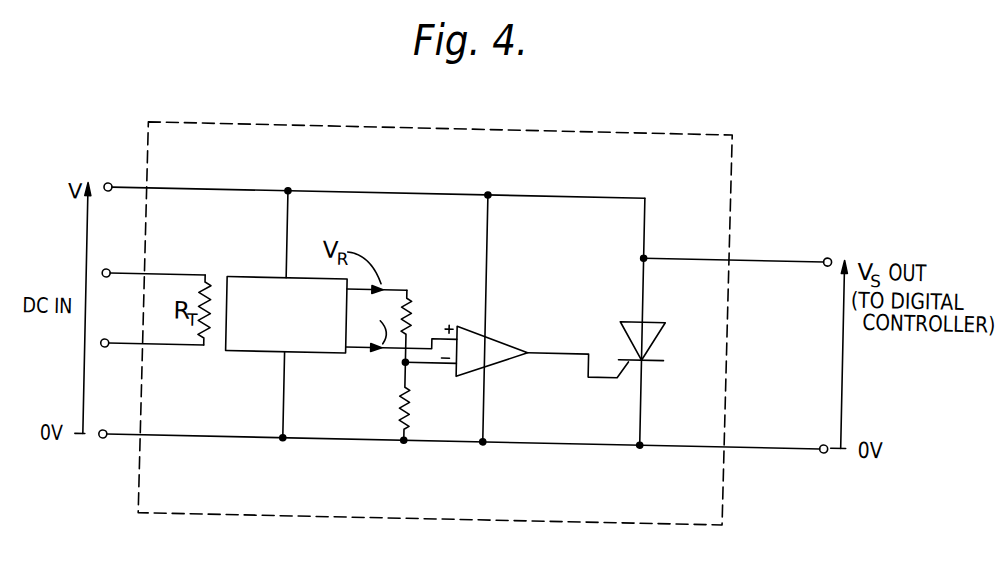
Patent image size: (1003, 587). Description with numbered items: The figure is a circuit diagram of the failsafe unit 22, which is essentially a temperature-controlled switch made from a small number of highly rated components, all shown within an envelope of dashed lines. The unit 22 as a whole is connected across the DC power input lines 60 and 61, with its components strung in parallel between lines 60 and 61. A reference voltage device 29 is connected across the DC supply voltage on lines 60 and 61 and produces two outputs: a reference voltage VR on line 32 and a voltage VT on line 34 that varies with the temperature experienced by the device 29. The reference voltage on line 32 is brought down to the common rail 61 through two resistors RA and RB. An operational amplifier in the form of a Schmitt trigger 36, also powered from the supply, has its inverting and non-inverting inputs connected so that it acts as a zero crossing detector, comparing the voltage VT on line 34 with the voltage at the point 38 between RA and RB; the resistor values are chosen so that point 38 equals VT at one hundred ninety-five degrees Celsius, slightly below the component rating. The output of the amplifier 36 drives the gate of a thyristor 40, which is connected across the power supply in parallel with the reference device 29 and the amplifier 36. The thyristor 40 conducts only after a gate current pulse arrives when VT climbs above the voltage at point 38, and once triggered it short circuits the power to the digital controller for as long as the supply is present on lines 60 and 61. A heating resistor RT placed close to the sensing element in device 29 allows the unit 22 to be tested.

The failsafe unit 22 is at (254, 518).
The reference voltage device 29 is at (261, 351).
The line 32 is at (404, 274).
The line 34 is at (363, 343).
The Schmitt trigger 36 is at (510, 342).
The point 38 is at (409, 356).
The thyristor 40 is at (623, 312).
The DC power input line 60 is at (199, 185).
The DC power input line 61 is at (207, 434).